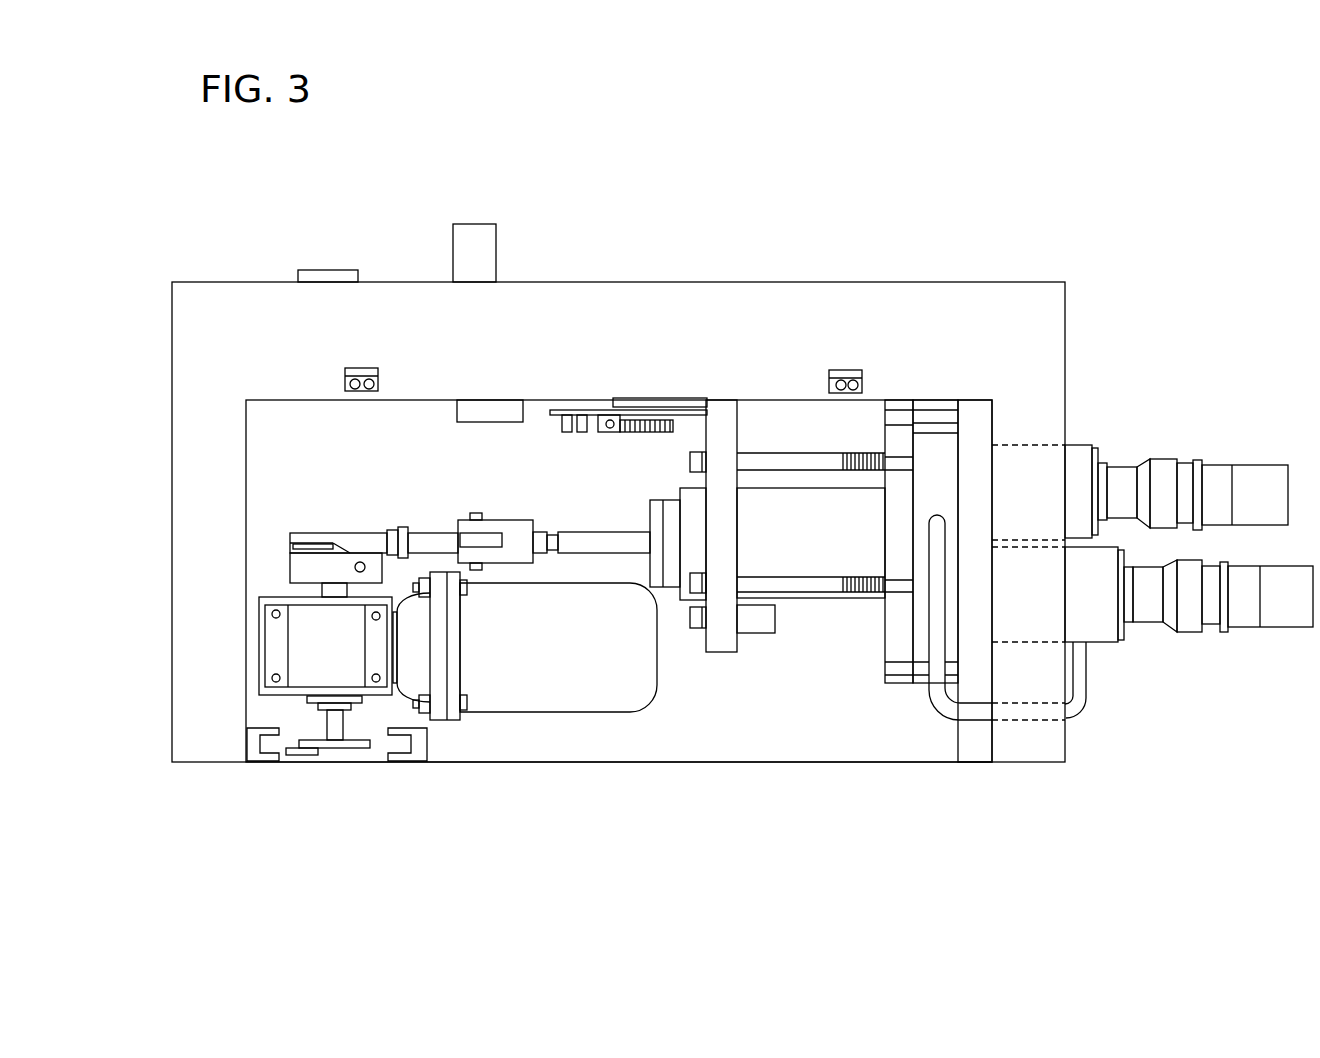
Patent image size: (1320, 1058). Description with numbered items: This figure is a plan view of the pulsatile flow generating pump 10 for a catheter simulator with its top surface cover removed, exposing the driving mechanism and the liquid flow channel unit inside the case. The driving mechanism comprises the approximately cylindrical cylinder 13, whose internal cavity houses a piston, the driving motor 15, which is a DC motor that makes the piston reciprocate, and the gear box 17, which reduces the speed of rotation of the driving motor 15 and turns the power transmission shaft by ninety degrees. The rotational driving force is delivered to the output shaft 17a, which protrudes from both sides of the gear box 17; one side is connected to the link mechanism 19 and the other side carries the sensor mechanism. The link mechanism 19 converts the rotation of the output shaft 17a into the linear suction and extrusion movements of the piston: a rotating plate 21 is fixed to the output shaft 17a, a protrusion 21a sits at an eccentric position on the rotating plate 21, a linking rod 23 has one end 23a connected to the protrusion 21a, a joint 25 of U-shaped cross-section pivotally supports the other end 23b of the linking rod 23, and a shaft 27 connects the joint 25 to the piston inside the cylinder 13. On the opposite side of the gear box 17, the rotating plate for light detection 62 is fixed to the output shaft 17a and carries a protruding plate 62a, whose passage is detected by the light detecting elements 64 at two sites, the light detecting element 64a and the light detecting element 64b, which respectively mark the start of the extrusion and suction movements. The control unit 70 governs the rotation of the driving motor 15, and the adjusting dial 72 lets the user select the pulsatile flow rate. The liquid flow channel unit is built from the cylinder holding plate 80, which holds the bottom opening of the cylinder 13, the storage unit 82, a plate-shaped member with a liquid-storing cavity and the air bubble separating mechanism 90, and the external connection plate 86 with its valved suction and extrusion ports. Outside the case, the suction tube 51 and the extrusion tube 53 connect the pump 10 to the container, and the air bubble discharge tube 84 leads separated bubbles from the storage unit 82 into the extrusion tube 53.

The pulsatile flow generating pump 10 is at (714, 222).
The cylinder 13 is at (772, 505).
The driving motor 15 is at (493, 694).
The gear box 17 is at (305, 663).
The output shaft 17a is at (330, 590).
The link mechanism 19 is at (452, 492).
The rotating plate 21 is at (305, 568).
The protrusion 21a is at (300, 550).
The linking rod 23 is at (427, 543).
The one end of linking rod 23a is at (297, 538).
The other end of linking rod 23b is at (470, 520).
The joint 25 is at (518, 549).
The shaft 27 is at (602, 544).
The suction tube 51 is at (1258, 473).
The extrusion tube 53 is at (1278, 612).
The rotating plate for light detection 62 is at (357, 749).
The protruding plate 62a is at (302, 756).
The light detecting elements 64 is at (357, 799).
The light detecting element 64a is at (266, 751).
The light detecting element 64b is at (400, 753).
The control unit 70 is at (600, 418).
The adjusting dial 72 is at (510, 412).
The cylinder holding plate 80 is at (900, 432).
The storage unit 82 is at (938, 448).
The air bubble discharge tube 84 is at (1086, 706).
The external connection plate 86 is at (973, 413).
The air bubble separating mechanism 90 is at (951, 388).